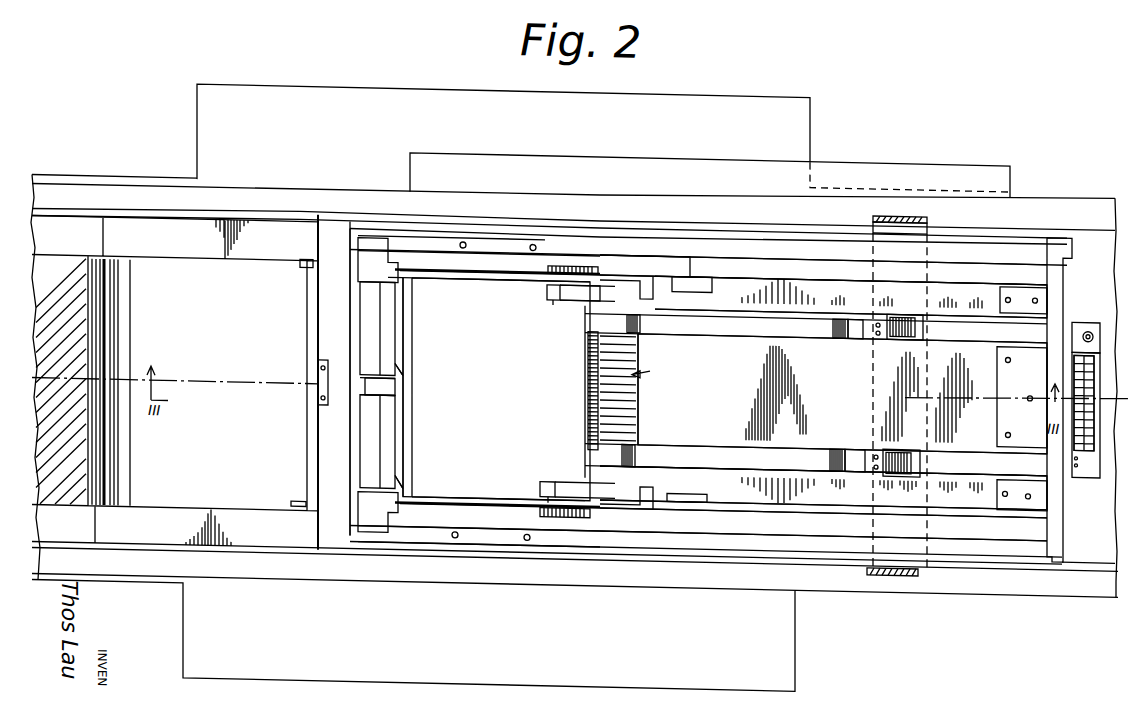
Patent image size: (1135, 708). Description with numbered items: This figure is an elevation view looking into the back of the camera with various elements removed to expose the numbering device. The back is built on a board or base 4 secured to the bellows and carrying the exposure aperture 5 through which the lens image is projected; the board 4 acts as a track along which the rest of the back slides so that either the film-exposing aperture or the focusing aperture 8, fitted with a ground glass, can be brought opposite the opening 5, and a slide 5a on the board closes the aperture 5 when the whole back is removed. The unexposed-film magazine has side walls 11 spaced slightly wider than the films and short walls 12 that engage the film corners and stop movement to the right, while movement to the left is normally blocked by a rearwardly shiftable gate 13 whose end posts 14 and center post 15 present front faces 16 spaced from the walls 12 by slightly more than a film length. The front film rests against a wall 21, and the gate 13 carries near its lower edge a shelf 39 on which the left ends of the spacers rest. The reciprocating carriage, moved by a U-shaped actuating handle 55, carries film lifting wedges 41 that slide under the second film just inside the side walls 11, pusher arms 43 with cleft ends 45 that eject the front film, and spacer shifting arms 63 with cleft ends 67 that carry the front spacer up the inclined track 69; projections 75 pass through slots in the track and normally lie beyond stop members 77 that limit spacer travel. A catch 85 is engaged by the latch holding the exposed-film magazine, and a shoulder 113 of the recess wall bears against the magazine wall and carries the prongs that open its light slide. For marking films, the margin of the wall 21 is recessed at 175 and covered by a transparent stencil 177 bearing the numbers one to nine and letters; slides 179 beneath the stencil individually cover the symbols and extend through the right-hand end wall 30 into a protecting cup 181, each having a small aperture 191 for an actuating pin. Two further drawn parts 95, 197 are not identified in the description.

The board or base 4 is at (810, 135).
The slide 5a is at (890, 170).
The exposure aperture 5 is at (513, 493).
The focusing aperture 8 is at (61, 277).
The side walls 11 is at (427, 516).
The short walls 12 is at (620, 518).
The gate 13 is at (350, 452).
The end posts 14 is at (360, 513).
The center post 15 is at (368, 391).
The front faces 16 is at (420, 481).
The wall 21 is at (580, 310).
The right hand end wall 30 is at (1063, 520).
The shelf 39 is at (420, 437).
The film lifting wedges 41 is at (565, 512).
The pusher arms 43 is at (541, 486).
The cleft ends 45 is at (555, 484).
The U-shaped actuating handle 55 is at (903, 571).
The spacer shifting arms 63 is at (735, 438).
The cleft ends 67 is at (841, 442).
The inclined track 69 is at (752, 510).
The projections 75 is at (942, 465).
The stop members 77 is at (997, 491).
The catch 85 is at (325, 368).
The roller 95 is at (140, 330).
The shoulder 113 is at (298, 508).
The recess 175 is at (585, 446).
The stencil 177 is at (619, 390).
The slides 179 is at (1074, 363).
The protecting cup 181 is at (1083, 468).
The small aperture 191 is at (1091, 415).
The knob 197 is at (1090, 312).